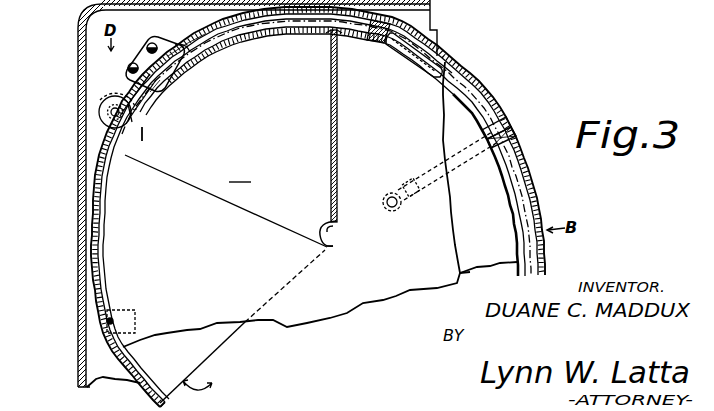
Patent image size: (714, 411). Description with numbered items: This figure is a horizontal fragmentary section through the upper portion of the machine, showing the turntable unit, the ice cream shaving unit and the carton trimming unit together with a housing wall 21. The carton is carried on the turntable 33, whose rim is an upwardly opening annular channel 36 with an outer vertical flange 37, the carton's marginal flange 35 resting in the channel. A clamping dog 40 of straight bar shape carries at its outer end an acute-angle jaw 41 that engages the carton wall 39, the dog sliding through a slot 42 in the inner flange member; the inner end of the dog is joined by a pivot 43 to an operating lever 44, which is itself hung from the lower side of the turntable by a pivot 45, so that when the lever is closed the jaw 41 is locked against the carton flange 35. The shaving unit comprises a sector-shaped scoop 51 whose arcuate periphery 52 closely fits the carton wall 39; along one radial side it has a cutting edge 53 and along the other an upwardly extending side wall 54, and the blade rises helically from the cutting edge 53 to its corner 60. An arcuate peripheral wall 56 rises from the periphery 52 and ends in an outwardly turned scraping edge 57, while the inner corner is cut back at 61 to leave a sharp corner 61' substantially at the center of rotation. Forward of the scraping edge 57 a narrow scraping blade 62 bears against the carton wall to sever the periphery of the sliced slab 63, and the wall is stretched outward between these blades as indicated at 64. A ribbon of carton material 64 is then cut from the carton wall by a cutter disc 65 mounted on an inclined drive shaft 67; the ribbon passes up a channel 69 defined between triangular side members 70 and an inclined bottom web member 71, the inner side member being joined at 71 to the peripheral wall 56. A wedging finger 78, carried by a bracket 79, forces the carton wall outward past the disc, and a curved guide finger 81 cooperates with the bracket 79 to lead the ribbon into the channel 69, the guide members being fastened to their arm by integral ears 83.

The wall 21 is at (78, 44).
The turntable 33 is at (473, 272).
The marginal flange 35 is at (516, 197).
The annular channel 36 is at (450, 76).
The outer vertical flange 37 is at (466, 90).
The carton wall 39 is at (143, 386).
The clamping dog 40 is at (507, 128).
The jaw 41 is at (510, 140).
The slot 42 is at (498, 152).
The pivot 43 is at (413, 178).
The operating lever 44 is at (452, 150).
The pivot 45 is at (389, 211).
The scoop 51 is at (198, 347).
The arcuate periphery 52 is at (92, 275).
The cutting edge 53 is at (243, 326).
The side wall 54 is at (332, 128).
The peripheral wall 56 is at (196, 60).
The scraping edge 57 is at (104, 228).
The corner 60 is at (333, 32).
The cut back 61 is at (340, 233).
The sharp corner 61' is at (343, 255).
The scraping blade 62 is at (112, 330).
The sliced slab 63 is at (172, 178).
The ribbon of carton material 64 is at (260, 22).
The cutter disc 65 is at (99, 119).
The drive shaft 67 is at (111, 112).
The channel 69 is at (381, 24).
The side members 70 is at (223, 38).
The bottom web member 71 is at (437, 55).
The wedging finger 78 is at (146, 137).
The bracket 79 is at (168, 76).
The guide finger 81 is at (130, 84).
The ears 83 is at (152, 46).